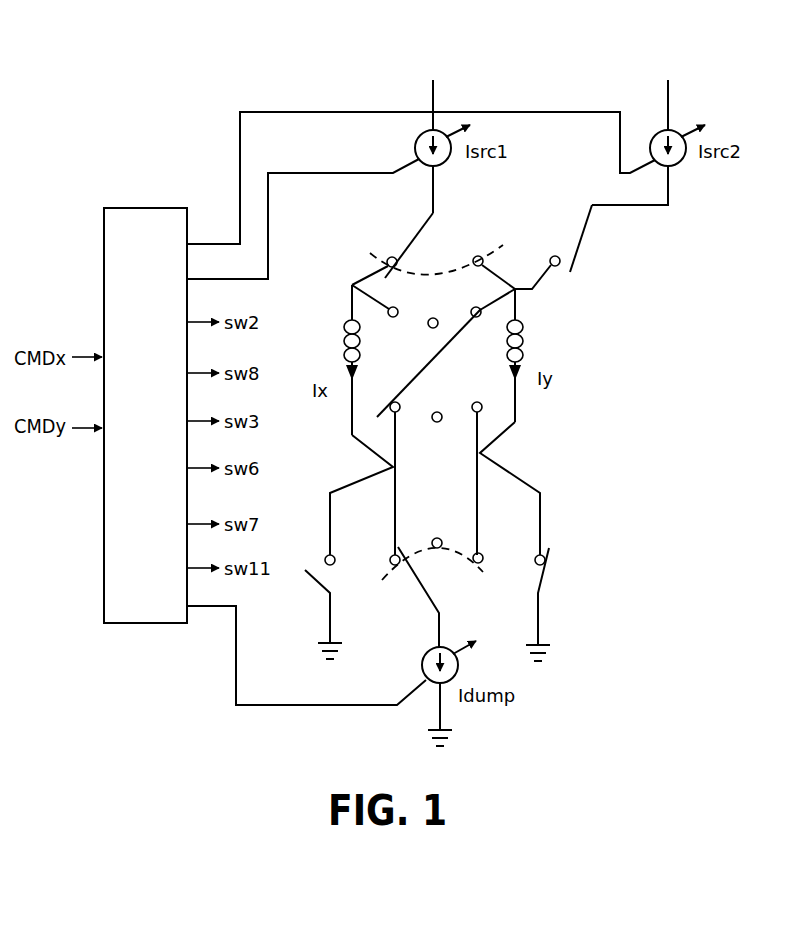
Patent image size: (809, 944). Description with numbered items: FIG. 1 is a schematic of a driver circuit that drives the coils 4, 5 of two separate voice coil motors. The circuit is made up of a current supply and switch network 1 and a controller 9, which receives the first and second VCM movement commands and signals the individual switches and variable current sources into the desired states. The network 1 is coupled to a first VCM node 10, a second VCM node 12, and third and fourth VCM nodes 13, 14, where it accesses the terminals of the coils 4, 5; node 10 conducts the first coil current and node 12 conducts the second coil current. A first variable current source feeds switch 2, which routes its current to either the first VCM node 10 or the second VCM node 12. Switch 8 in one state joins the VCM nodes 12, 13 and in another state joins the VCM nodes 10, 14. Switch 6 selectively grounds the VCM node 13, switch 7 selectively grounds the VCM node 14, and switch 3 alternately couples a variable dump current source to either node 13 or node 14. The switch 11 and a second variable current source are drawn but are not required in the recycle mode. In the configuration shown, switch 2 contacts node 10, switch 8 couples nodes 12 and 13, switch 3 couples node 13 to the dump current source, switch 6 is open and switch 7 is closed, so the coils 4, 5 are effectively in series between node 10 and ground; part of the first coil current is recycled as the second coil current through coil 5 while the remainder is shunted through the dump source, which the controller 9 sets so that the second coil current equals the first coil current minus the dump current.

The current supply and switch network 1 is at (586, 646).
The switch 2 is at (420, 223).
The switch 3 is at (443, 588).
The coil 4 is at (340, 342).
The coil 5 is at (527, 337).
The switch 6 is at (330, 578).
The switch 7 is at (550, 585).
The switch 8 is at (437, 363).
The controller 9 is at (137, 626).
The first VCM node 10 is at (388, 257).
The switch 11 is at (580, 218).
The second VCM node 12 is at (480, 254).
The third VCM node 13 is at (325, 550).
The fourth VCM node 14 is at (548, 543).